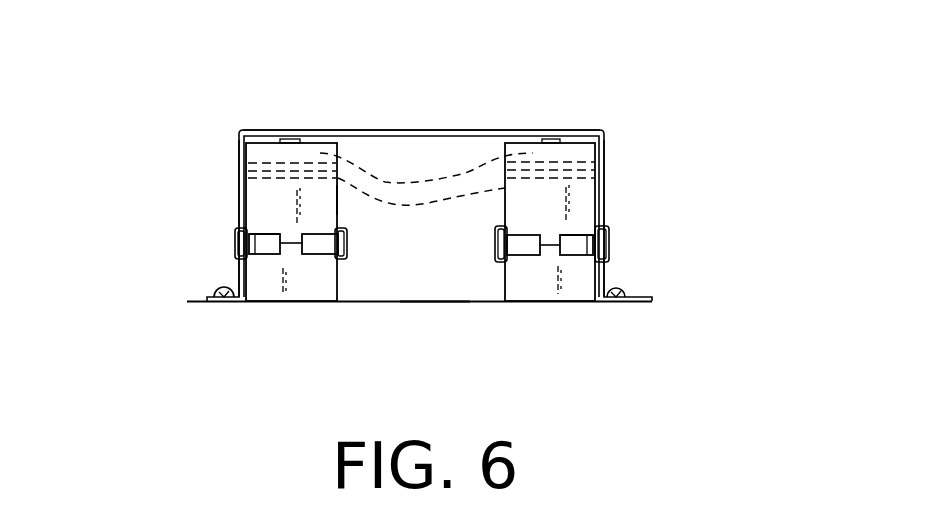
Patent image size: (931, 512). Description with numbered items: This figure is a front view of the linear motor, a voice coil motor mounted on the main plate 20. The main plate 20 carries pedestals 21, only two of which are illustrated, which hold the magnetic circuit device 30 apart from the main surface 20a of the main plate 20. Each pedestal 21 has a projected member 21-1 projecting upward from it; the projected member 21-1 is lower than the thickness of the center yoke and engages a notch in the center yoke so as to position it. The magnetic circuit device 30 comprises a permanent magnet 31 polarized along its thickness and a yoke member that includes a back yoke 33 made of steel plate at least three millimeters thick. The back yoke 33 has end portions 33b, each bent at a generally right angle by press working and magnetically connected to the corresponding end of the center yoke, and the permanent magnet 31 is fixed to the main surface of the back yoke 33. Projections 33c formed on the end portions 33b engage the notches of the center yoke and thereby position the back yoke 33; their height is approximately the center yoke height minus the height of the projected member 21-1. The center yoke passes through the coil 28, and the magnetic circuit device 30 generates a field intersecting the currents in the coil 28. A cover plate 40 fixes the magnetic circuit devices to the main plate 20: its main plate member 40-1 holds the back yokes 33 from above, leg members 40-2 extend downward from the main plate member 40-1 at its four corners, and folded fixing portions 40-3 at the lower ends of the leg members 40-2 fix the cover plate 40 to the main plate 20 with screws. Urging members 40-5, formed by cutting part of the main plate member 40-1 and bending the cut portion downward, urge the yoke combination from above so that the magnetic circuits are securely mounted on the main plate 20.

The main plate 20 is at (402, 370).
The main surface of the main plate 20a is at (437, 300).
The pedestal 21 is at (272, 280).
The projected member 21-1 is at (293, 245).
The coil 28 is at (347, 247).
The magnetic circuit device 30 is at (346, 200).
The permanent magnet 31 is at (400, 215).
The back yoke 33 is at (426, 173).
The end portion of the back yoke 33b is at (260, 192).
The projection of the back yoke 33c is at (294, 236).
The cover plate 40 is at (519, 110).
The main plate member 40-1 is at (403, 132).
The leg member 40-2 is at (240, 163).
The fixing portion 40-3 is at (215, 296).
The urging member 40-5 is at (290, 137).